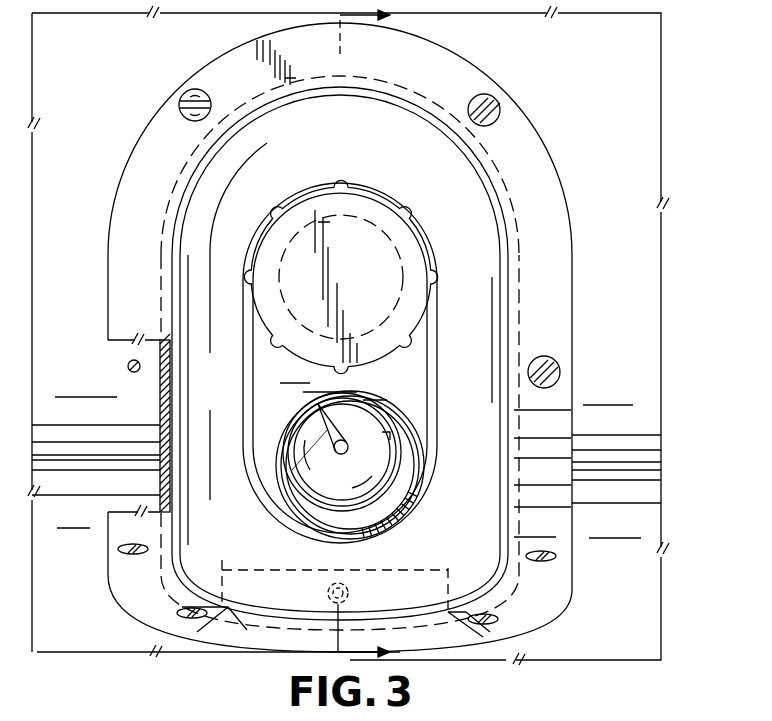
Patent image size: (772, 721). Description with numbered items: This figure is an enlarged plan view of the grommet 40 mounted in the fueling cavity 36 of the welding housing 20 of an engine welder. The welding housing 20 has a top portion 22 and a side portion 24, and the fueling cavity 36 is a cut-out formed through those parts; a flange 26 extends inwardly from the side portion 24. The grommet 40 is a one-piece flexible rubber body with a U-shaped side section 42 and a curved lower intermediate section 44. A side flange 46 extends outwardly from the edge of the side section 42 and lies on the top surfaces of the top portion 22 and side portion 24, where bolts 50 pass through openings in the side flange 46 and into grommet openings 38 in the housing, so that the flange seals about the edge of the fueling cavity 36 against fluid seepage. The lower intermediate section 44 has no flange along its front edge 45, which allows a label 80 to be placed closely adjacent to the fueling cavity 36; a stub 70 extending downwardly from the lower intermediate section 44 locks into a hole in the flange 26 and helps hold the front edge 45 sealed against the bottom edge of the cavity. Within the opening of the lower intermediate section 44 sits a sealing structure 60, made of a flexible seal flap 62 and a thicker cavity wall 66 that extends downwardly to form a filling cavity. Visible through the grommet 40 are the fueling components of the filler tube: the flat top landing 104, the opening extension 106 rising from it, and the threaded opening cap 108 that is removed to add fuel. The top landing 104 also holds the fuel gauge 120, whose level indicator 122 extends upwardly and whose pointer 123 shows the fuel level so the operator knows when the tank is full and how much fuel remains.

The welding housing 20 is at (668, 62).
The top portion 22 is at (640, 102).
The side portion 24 is at (638, 625).
The flange 26 is at (287, 595).
The fueling cavity 36 is at (166, 372).
The grommet openings 38 is at (128, 369).
The grommet 40 is at (568, 312).
The side section 42 is at (322, 88).
The lower intermediate section 44 is at (444, 363).
The front edge 45 is at (416, 613).
The side flange 46 is at (540, 173).
The bolts 50 is at (497, 100).
The sealing structure 60 is at (268, 498).
The seal flap 62 is at (411, 417).
The cavity wall 66 is at (417, 503).
The stub 70 is at (352, 583).
The label 80 is at (242, 627).
The top landing 104 is at (386, 368).
The opening extension 106 is at (358, 220).
The opening cap 108 is at (400, 237).
The fuel gauge 120 is at (310, 487).
The level indicator 122 is at (388, 441).
The pointer 123 is at (342, 437).